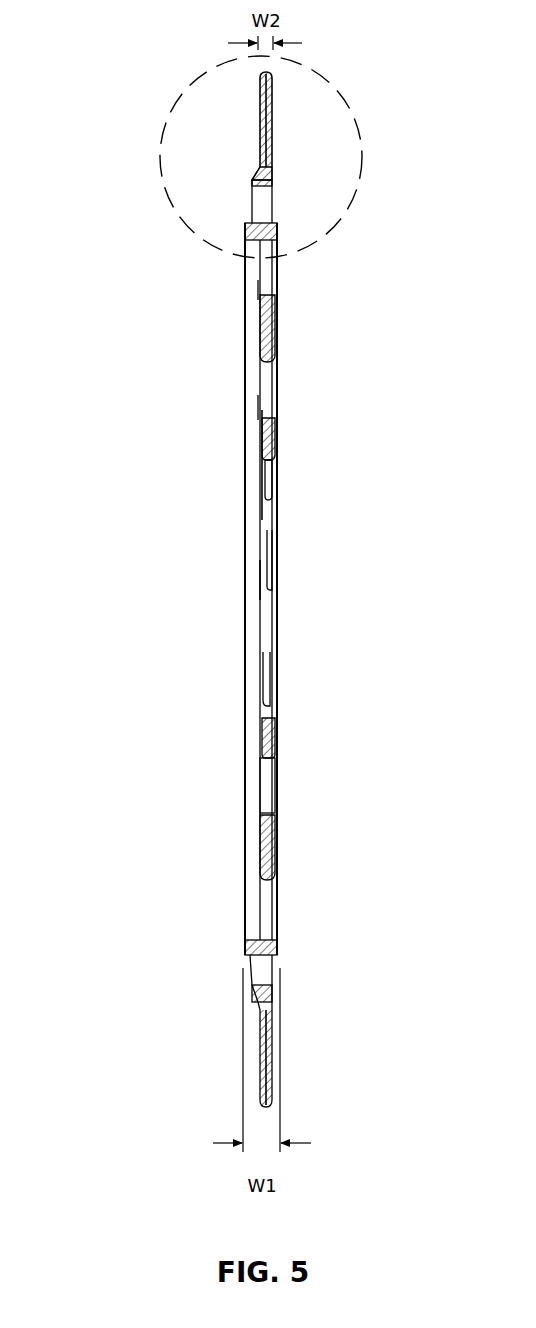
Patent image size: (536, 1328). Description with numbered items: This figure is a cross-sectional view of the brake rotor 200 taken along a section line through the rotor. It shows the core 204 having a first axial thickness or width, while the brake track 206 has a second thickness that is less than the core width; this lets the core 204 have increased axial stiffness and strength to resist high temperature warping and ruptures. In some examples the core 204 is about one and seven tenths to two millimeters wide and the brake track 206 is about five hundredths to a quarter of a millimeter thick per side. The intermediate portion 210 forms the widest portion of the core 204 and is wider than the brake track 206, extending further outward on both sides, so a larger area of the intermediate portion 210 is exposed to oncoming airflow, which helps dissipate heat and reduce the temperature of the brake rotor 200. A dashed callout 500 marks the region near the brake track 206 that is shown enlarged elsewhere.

The brake rotor 200 is at (105, 257).
The core 204 is at (267, 483).
The brake track 206 is at (260, 145).
The intermediate portion 210 is at (250, 273).
The callout 500 is at (330, 82).